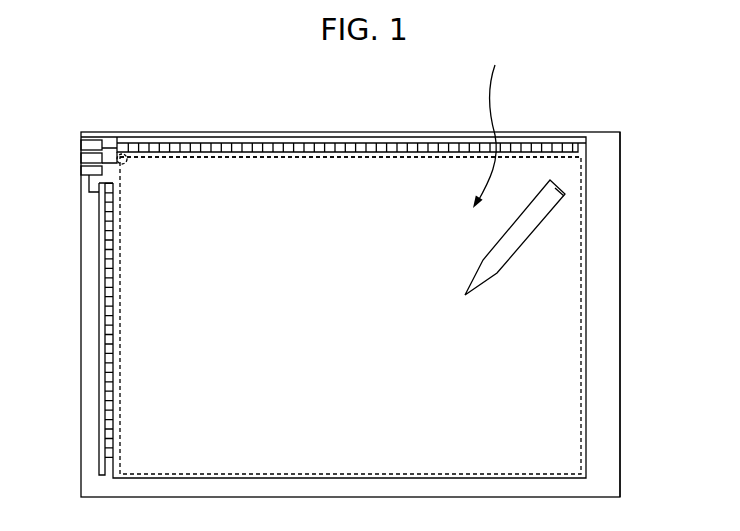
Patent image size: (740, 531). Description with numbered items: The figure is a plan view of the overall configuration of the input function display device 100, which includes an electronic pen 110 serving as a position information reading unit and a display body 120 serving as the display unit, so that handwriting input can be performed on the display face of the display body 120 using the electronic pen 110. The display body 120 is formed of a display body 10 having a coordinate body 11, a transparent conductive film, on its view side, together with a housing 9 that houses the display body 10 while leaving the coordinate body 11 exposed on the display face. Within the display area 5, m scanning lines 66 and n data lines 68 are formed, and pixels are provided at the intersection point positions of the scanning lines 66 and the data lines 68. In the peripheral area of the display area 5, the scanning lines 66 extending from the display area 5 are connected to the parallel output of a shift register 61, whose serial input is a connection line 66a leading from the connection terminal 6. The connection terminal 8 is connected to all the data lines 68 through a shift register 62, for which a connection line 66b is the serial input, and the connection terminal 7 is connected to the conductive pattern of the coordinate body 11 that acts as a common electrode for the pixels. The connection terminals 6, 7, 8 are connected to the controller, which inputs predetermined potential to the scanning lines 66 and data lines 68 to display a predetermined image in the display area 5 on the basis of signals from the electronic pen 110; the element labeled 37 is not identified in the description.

The display area 5 is at (505, 58).
The connection terminal 6 is at (83, 170).
The connection terminal 7 is at (83, 155).
The connection terminal 8 is at (85, 144).
The housing 9 is at (608, 226).
The display body 10 is at (587, 313).
The coordinate body 11 is at (582, 270).
The sensor electrode 37 is at (176, 156).
The shift register 61 is at (99, 252).
The shift register 62 is at (407, 141).
The scanning lines 66 is at (112, 373).
The connection line 66a is at (88, 186).
The connection line 66b is at (117, 144).
The data lines 68 is at (297, 146).
The input function display device 100 is at (585, 124).
The electronic pen 110 is at (566, 190).
The display body 120 is at (621, 340).